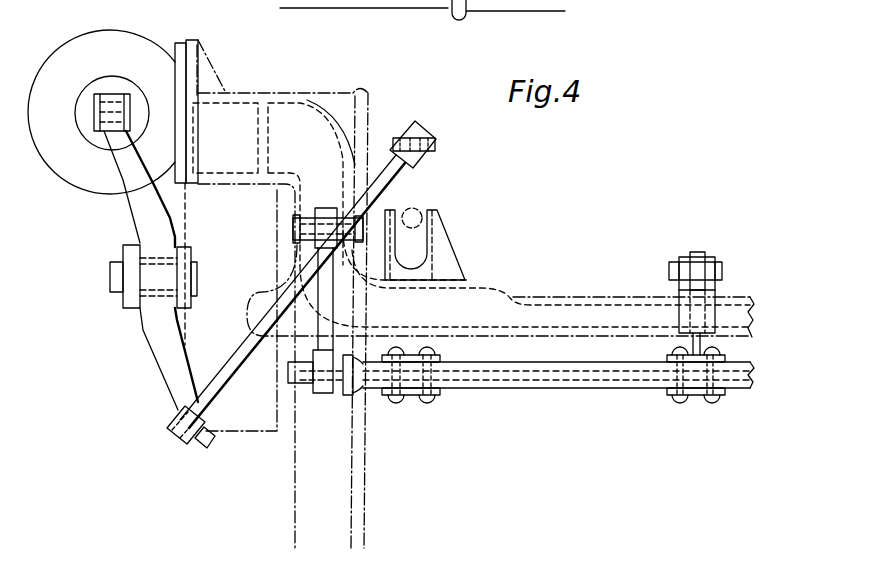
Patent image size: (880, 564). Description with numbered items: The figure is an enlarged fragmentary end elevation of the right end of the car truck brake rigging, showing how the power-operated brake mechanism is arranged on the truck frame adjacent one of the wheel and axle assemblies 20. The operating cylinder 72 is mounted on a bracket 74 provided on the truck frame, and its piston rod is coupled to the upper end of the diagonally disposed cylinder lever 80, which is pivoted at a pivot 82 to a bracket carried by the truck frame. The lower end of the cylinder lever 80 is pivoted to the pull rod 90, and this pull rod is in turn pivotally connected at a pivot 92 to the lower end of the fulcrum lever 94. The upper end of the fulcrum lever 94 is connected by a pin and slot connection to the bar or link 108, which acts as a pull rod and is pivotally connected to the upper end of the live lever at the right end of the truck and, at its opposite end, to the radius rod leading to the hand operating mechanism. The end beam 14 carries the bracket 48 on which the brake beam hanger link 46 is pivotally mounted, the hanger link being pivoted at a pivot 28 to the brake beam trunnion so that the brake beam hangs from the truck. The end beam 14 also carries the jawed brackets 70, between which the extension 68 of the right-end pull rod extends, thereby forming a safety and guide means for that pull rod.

The end beam 14 is at (502, 306).
The wheel and axle assembly 20 is at (356, 503).
The pivot of brake beam hanger link to brake beam trunnion 28 is at (309, 382).
The brake beam hanger link 46 is at (682, 344).
The bracket 48 is at (700, 257).
The extension of pull rod 68 is at (415, 212).
The bracket 70 is at (437, 232).
The operating cylinder 72 is at (61, 172).
The bracket 74 is at (198, 41).
The cylinder lever 80 is at (156, 345).
The pivot of operating lever 82 is at (128, 274).
The pull rod 90 is at (186, 448).
The pivotal connection of pull rod to fulcrum lever 92 is at (168, 421).
The fulcrum lever 94 is at (219, 392).
The bar or link 108 is at (424, 141).